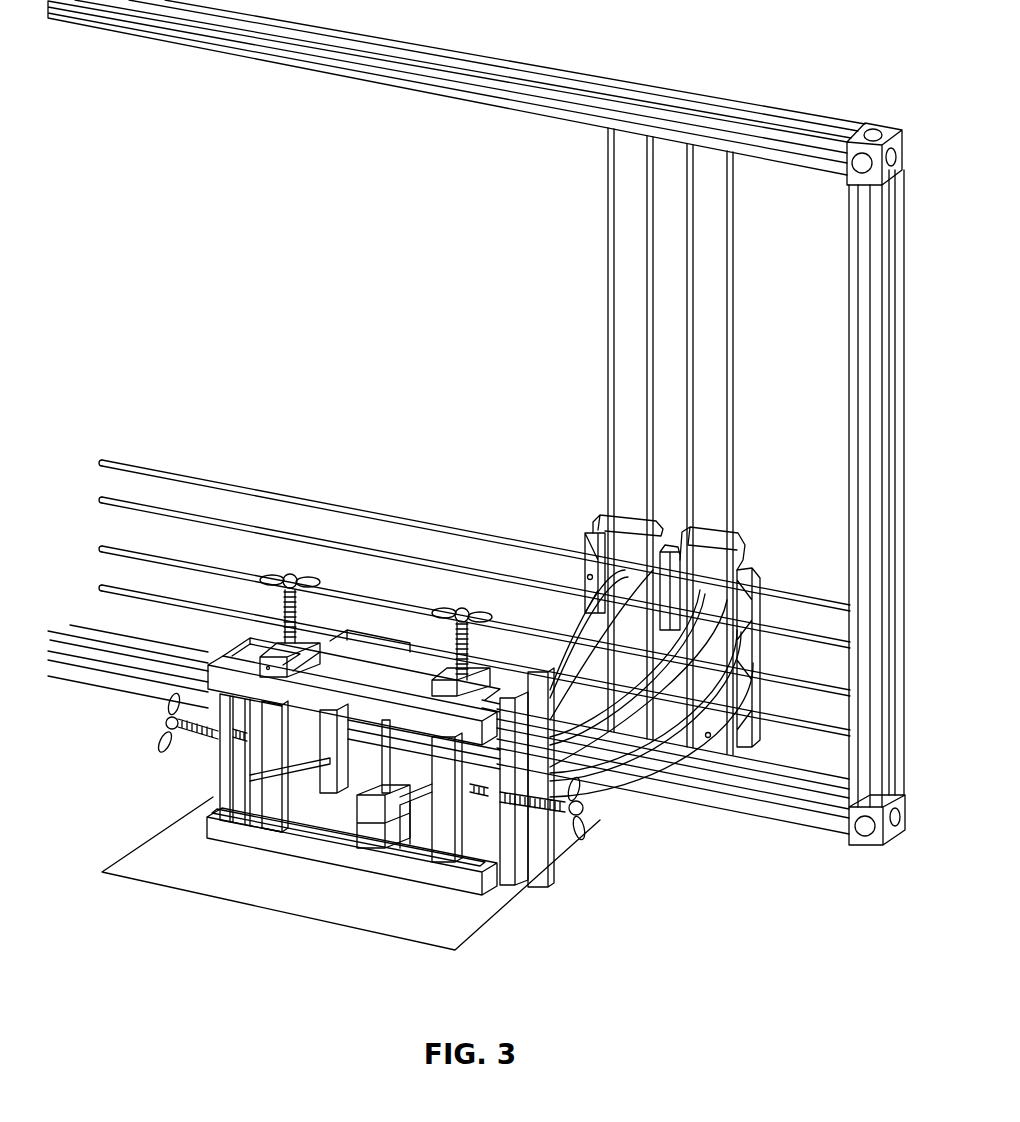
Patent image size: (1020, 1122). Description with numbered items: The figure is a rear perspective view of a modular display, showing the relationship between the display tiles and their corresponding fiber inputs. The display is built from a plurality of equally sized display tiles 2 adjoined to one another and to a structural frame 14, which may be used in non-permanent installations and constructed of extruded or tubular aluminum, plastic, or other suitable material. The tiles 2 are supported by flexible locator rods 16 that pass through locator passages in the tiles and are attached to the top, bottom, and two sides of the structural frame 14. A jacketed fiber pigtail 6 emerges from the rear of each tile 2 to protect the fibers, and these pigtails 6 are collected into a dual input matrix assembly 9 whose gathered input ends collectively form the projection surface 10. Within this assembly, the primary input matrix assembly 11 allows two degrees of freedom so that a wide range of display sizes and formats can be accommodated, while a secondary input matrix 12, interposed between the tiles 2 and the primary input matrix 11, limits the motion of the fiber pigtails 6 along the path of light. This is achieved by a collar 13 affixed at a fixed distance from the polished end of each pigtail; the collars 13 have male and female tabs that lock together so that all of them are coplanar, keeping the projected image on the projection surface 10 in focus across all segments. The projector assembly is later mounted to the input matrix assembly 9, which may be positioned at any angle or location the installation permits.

The structural frame 14 is at (288, 74).
The flexible locator rods 16 is at (600, 198).
The display tile 2 is at (578, 523).
The fiber pigtail 6 is at (657, 762).
The dual input matrix assembly 9 is at (349, 783).
The projection surface 10 is at (393, 850).
The primary input matrix assembly 11 is at (297, 808).
The secondary input matrix 12 is at (530, 744).
The collar 13 is at (537, 836).